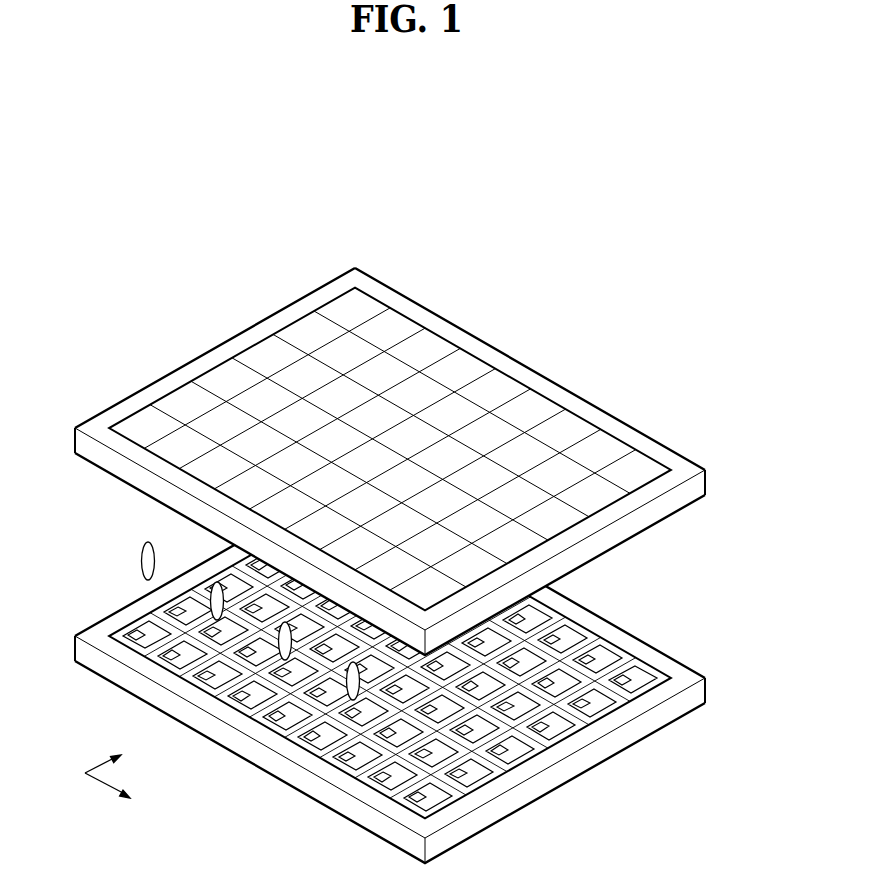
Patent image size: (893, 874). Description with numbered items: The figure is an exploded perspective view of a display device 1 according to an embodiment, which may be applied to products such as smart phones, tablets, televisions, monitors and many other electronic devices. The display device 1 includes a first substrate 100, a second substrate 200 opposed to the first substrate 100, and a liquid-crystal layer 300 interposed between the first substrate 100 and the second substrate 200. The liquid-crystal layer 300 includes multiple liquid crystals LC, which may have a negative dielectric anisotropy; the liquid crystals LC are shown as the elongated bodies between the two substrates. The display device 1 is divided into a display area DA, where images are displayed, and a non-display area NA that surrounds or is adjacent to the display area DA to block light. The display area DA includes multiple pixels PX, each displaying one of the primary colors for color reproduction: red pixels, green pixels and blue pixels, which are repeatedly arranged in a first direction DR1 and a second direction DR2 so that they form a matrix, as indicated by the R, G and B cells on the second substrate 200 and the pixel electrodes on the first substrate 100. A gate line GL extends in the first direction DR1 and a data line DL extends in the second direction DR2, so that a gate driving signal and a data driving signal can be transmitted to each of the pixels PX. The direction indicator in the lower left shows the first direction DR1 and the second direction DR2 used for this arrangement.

The display device 1 is at (403, 161).
The first substrate 100 is at (425, 674).
The second substrate 200 is at (425, 461).
The liquid-crystal layer 300 is at (411, 603).
The display area DA is at (443, 338).
The non-display area NA is at (543, 387).
The liquid crystals LC is at (140, 562).
The pixels PX is at (382, 781).
The data line DL is at (390, 657).
The gate line GL is at (390, 657).
The first direction DR1 is at (131, 797).
The second direction DR2 is at (127, 755).